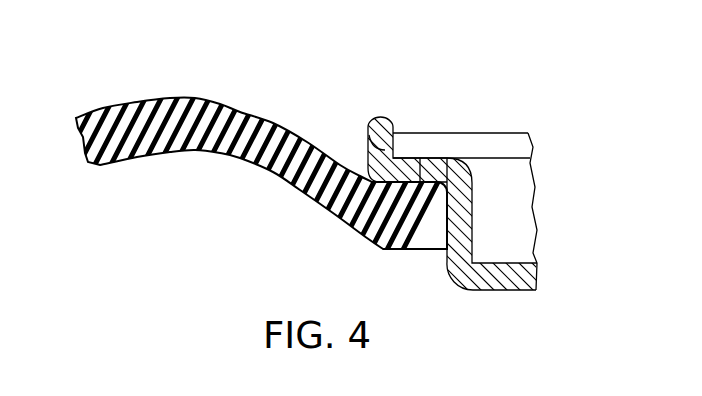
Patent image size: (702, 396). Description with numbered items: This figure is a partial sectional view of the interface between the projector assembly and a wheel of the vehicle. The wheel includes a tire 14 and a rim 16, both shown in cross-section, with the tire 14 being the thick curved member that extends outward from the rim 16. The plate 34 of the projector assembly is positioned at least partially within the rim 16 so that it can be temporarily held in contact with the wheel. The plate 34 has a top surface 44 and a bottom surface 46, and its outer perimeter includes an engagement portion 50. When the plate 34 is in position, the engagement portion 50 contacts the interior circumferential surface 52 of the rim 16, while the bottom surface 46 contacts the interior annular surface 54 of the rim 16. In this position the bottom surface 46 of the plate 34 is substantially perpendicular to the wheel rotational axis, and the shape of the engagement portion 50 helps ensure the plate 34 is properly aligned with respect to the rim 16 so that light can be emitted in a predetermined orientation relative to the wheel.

The tire 14 is at (177, 116).
The rim 16 is at (450, 257).
The plate 34 is at (513, 152).
The top surface 44 is at (500, 133).
The bottom surface 46 is at (508, 158).
The engagement portion 50 is at (371, 136).
The interior circumferential surface 52 is at (393, 140).
The interior annular surface 54 is at (420, 160).